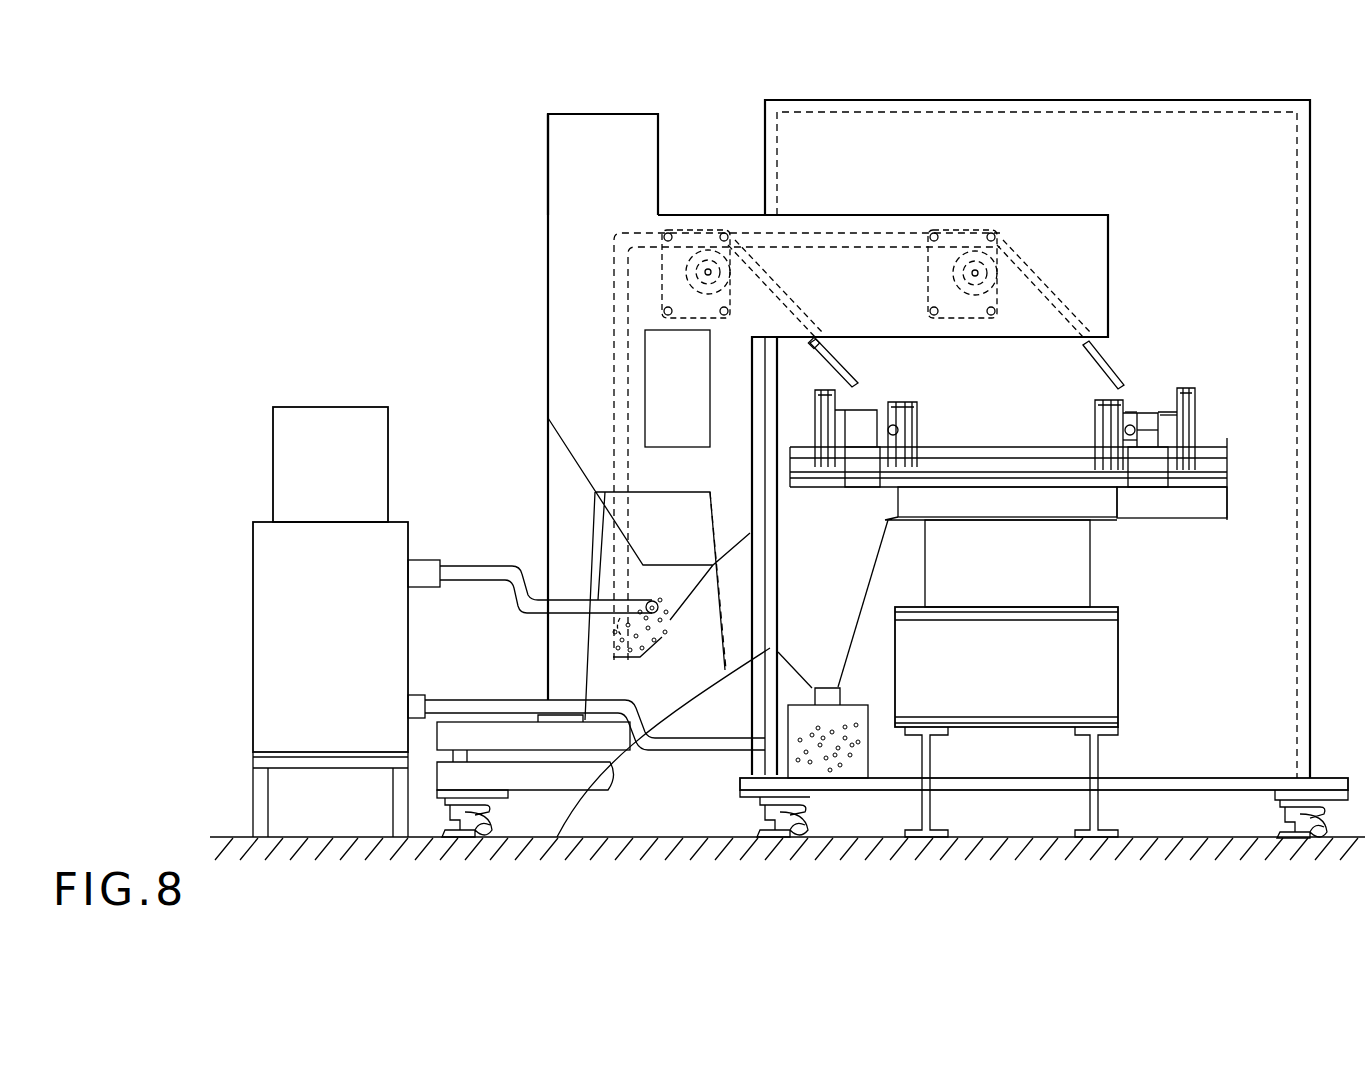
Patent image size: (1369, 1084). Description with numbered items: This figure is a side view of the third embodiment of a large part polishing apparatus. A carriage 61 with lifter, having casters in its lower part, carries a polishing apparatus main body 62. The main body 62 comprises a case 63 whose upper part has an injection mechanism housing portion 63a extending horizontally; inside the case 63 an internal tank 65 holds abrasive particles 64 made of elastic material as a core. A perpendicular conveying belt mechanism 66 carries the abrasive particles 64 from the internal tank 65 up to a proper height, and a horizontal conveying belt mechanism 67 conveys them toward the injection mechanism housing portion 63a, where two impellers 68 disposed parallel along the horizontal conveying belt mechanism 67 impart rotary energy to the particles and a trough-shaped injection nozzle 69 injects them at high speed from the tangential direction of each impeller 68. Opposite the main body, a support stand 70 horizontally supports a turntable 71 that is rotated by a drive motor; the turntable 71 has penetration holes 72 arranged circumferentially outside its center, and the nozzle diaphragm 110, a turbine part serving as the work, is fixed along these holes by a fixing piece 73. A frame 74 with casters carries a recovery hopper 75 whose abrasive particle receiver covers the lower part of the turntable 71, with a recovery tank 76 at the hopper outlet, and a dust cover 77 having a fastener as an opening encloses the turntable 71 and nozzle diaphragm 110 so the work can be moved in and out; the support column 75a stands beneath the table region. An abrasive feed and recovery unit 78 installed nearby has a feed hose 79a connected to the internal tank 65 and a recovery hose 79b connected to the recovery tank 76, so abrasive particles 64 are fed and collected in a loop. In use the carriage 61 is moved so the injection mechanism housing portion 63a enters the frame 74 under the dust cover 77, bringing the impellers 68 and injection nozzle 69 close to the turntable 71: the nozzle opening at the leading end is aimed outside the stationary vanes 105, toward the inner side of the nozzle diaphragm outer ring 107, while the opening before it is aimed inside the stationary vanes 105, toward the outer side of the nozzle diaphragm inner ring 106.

The carriage with lifter 61 is at (530, 778).
The polishing apparatus main body 62 is at (558, 328).
The case 63 is at (548, 456).
The injection mechanism housing portion 63a is at (716, 215).
The abrasive particles 64 is at (668, 630).
The internal tank 65 is at (593, 562).
The perpendicular conveying belt mechanism 66 is at (628, 381).
The horizontal conveying belt mechanism 67 is at (840, 230).
The impellers 68 is at (975, 275).
The injection nozzle 69 is at (840, 361).
The support stand 70 is at (1105, 680).
The turntable 71 is at (1006, 450).
The penetration holes 72 is at (1145, 492).
The fixing piece 73 is at (1178, 397).
The frame with casters 74 is at (1188, 787).
The recovery hopper 75 is at (860, 571).
The support column 75a is at (1130, 520).
The recovery tank 76 is at (870, 748).
The dust cover 77 is at (1097, 128).
The abrasive feed and recovery unit 78 is at (268, 661).
The feed hose 79a is at (480, 582).
The recovery hose 79b is at (698, 755).
The stationary vanes 105 is at (1148, 430).
The nozzle diaphragm inner ring 106 is at (1130, 440).
The nozzle diaphragm outer ring 107 is at (1170, 418).
The nozzle diaphragm 110 is at (1145, 398).